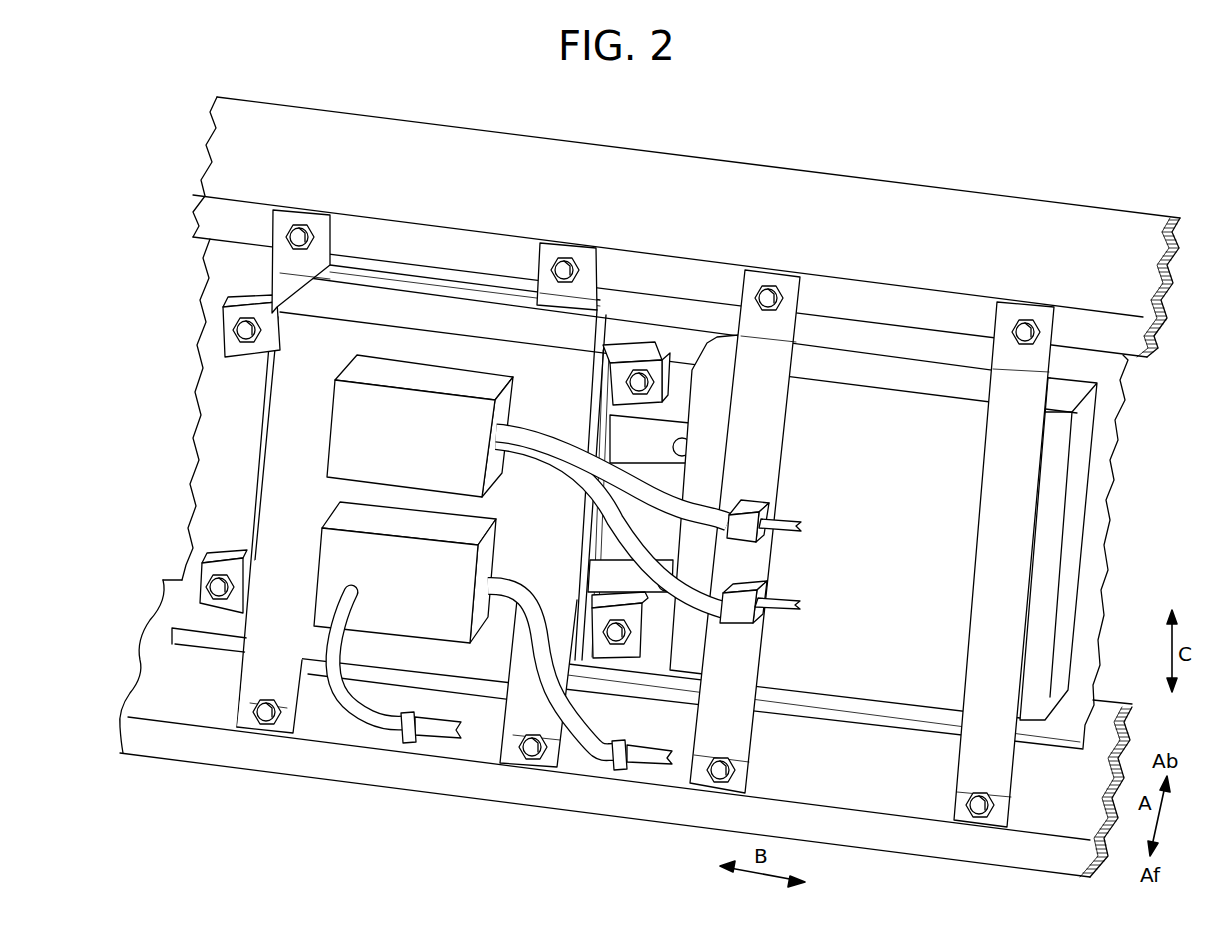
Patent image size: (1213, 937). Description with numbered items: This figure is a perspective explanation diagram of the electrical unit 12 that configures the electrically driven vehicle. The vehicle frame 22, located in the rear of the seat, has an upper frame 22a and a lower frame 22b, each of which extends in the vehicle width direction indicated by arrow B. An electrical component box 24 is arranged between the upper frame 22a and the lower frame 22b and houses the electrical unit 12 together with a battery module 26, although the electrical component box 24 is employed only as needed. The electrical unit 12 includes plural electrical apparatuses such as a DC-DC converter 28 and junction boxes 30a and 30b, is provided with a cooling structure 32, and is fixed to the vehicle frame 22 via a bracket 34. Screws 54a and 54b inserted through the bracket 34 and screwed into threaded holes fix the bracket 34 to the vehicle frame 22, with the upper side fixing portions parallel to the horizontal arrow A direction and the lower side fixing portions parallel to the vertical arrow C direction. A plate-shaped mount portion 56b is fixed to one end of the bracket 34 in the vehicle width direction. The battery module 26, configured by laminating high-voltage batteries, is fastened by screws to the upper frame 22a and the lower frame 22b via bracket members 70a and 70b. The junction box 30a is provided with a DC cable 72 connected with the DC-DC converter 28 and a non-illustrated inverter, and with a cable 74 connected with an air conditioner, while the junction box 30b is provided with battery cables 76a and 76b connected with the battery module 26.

The electrical unit 12 is at (612, 493).
The vehicle frame 22 is at (623, 487).
The upper frame 22a is at (200, 218).
The lower frame 22b is at (143, 672).
The electrical component box 24 is at (213, 400).
The battery module 26 is at (1077, 523).
The DC-DC converter 28 is at (604, 457).
The junction box 30a is at (335, 548).
The junction box 30b is at (358, 411).
The cooling structure 32 is at (604, 457).
The bracket 34 is at (419, 298).
The screw 54a is at (296, 232).
The screw 54b is at (262, 718).
The mount portion 56b is at (244, 443).
The bracket member 70a is at (788, 282).
The bracket member 70b is at (1042, 318).
The DC cable 72 is at (437, 735).
The cable 74 is at (650, 757).
The battery cable 76a is at (800, 535).
The battery cable 76b is at (682, 530).